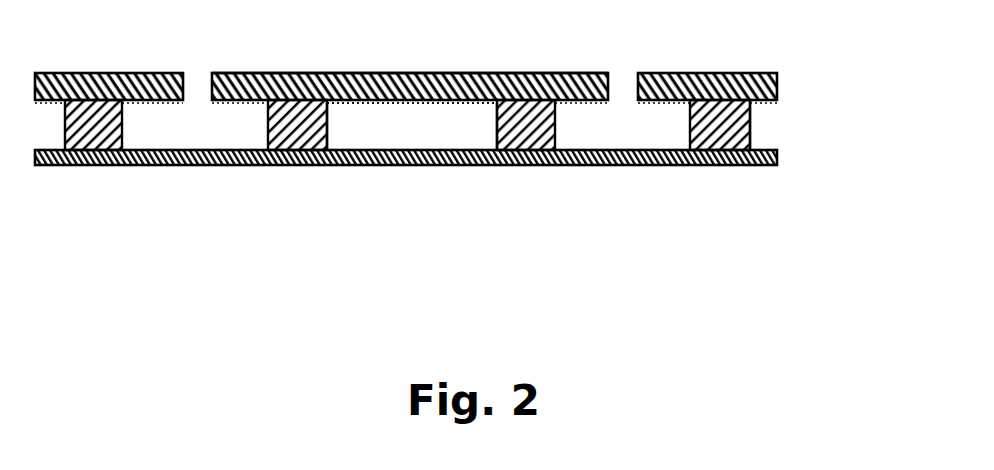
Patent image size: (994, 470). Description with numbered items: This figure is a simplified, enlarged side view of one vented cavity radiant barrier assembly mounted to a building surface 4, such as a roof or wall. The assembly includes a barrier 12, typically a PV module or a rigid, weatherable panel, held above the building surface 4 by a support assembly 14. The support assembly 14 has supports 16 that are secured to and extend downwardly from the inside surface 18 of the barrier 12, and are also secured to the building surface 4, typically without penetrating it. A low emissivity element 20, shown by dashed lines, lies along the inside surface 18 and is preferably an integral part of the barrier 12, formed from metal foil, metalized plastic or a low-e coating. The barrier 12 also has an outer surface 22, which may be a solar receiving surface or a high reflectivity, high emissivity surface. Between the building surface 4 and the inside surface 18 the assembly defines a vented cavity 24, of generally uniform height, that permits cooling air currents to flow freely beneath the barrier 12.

The building surface 4 is at (764, 147).
The barrier 12 is at (425, 73).
The support assembly 14 is at (766, 115).
The supports 16 is at (97, 135).
The inside surface 18 is at (357, 103).
The low emissivity element 20 is at (452, 102).
The outer surface 22 is at (327, 73).
The vented cavity 24 is at (413, 128).